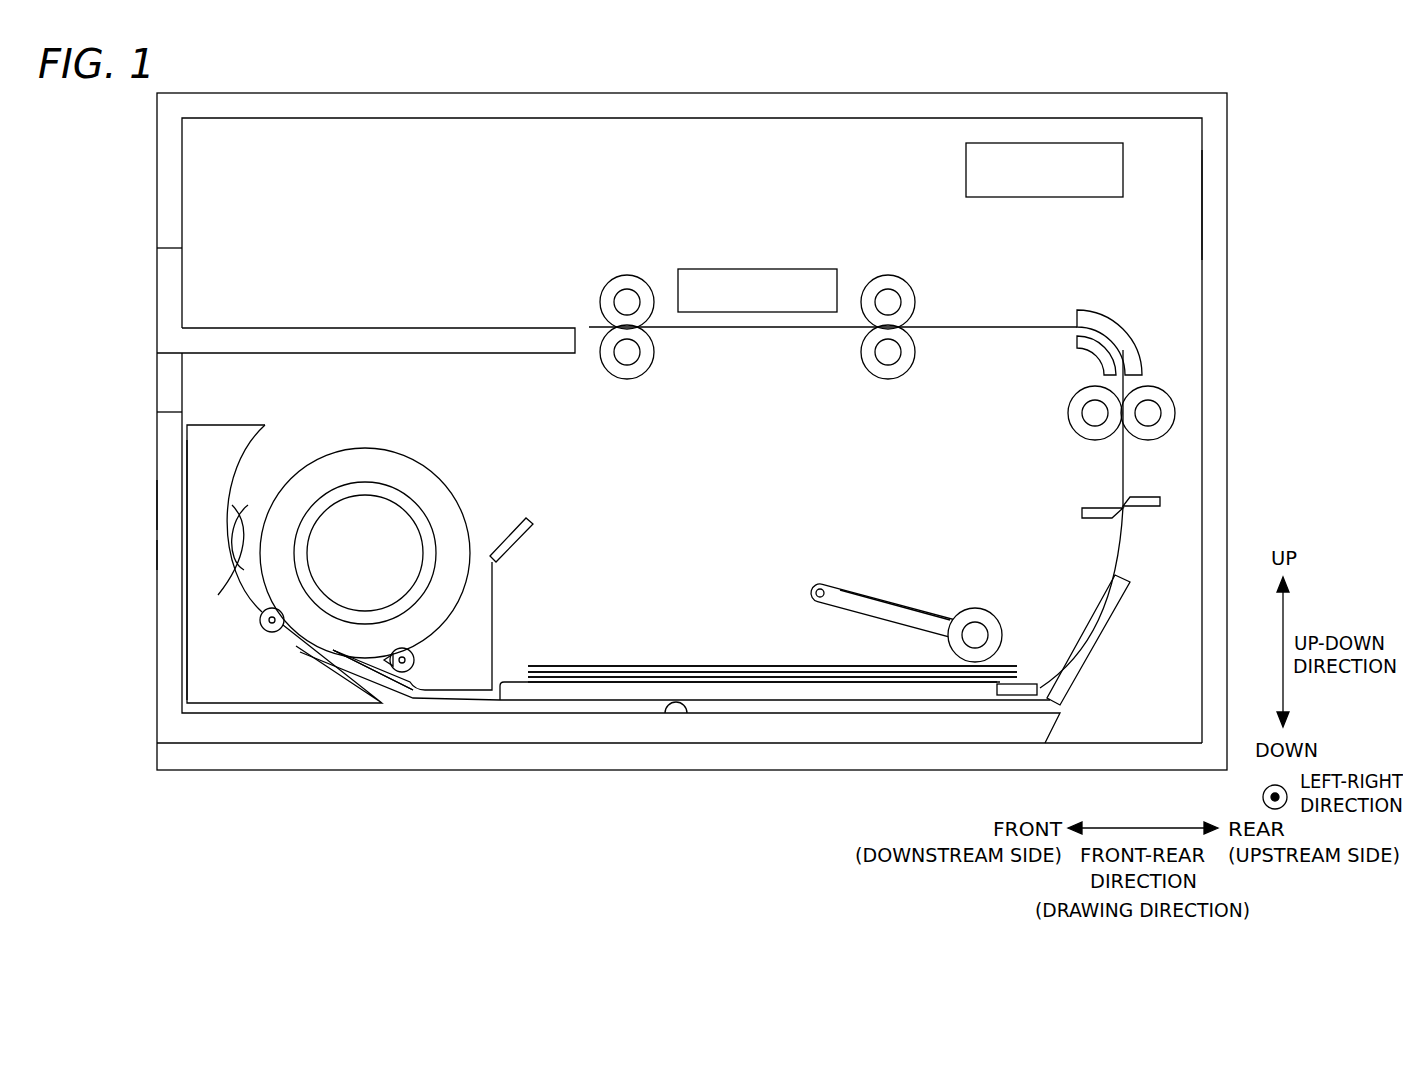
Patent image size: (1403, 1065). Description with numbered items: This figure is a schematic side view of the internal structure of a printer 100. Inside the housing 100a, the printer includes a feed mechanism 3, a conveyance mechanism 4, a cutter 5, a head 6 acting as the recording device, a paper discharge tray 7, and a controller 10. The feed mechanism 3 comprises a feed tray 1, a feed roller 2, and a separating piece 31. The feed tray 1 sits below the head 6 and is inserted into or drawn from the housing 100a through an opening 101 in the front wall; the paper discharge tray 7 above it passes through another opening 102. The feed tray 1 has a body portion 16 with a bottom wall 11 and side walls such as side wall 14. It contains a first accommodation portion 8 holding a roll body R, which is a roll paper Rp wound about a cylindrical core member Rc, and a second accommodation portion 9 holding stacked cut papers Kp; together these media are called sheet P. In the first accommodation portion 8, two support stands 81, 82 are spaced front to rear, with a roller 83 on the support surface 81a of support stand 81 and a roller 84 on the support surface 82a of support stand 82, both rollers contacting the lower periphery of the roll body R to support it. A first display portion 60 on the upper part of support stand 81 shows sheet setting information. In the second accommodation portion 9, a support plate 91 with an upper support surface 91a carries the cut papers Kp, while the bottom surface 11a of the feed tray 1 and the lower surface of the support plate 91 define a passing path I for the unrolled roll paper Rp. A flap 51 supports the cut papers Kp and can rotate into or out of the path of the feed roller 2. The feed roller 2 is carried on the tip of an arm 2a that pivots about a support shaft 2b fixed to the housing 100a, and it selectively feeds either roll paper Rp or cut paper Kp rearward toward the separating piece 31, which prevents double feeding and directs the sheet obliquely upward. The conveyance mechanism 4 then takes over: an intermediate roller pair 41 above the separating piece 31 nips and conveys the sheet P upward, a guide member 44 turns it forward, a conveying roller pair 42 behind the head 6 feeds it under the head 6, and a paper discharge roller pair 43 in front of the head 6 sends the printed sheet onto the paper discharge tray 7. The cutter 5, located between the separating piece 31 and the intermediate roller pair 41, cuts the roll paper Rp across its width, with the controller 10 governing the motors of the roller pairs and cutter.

The printer 100 is at (1278, 97).
The housing 100a is at (1213, 205).
The feed tray 1 is at (137, 500).
The paper discharge tray 7 is at (143, 312).
The opening 102 is at (157, 247).
The opening 101 is at (157, 412).
The side wall 14 is at (165, 556).
The body portion 16 is at (968, 730).
The controller 10 is at (966, 167).
The conveyance mechanism 4 is at (550, 301).
The paper discharge roller pair 43 is at (598, 250).
The conveying roller pair 42 is at (923, 263).
The head 6 is at (825, 245).
The guide member 44 is at (1128, 292).
The intermediate roller pair 41 is at (1040, 400).
The sheet P is at (1125, 487).
The cutter 5 is at (1070, 493).
The first accommodation portion 8 is at (287, 402).
The roll body R is at (372, 448).
The core member Rc is at (428, 505).
The support stand 82 is at (218, 675).
The support surface 82a is at (223, 568).
The roller 84 is at (272, 632).
The roller 83 is at (415, 700).
The support surface 81a is at (455, 613).
The support stand 81 is at (482, 613).
The first display portion 60 is at (515, 516).
The roll paper Rp is at (520, 700).
The bottom wall 11 is at (771, 730).
The bottom surface 11a is at (687, 713).
The passing path I is at (608, 702).
The second accommodation portion 9 is at (622, 634).
The cut paper Kp is at (732, 665).
The support surface 91a is at (690, 682).
The support plate 91 is at (858, 690).
The flap 51 is at (1015, 683).
The feed mechanism 3 is at (908, 533).
The arm 2a is at (893, 610).
The support shaft 2b is at (821, 588).
The feed roller 2 is at (1000, 622).
The separating piece 31 is at (1088, 639).